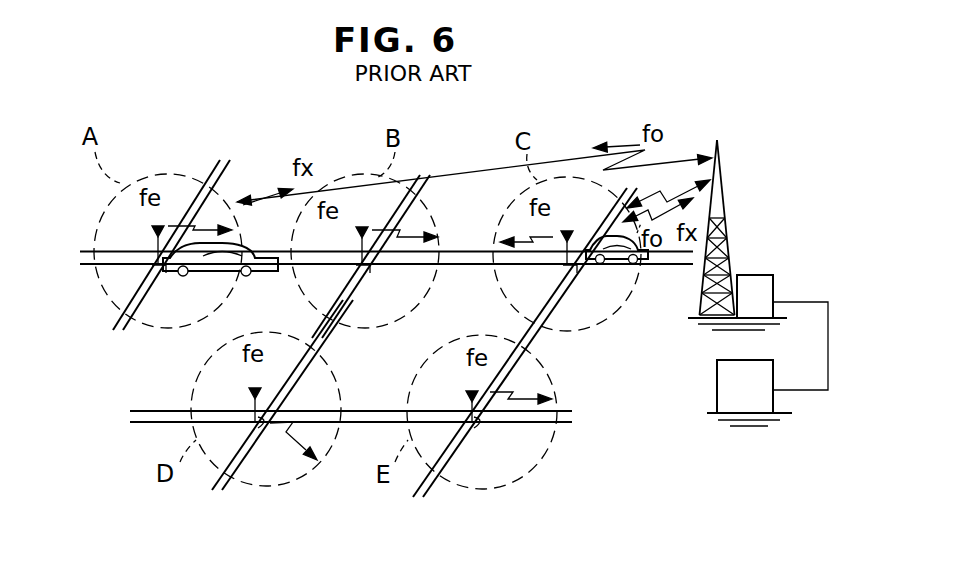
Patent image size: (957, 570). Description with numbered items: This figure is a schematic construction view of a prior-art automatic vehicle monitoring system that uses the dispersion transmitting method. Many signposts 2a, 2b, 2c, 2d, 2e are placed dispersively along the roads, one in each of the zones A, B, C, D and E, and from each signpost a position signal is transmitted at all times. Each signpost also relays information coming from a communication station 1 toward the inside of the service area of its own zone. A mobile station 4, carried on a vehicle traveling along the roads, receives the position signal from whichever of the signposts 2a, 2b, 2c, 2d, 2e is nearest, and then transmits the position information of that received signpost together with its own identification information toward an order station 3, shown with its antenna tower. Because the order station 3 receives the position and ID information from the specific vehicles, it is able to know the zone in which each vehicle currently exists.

The communication station 1 is at (755, 400).
The signpost 2a is at (100, 264).
The signpost 2b is at (380, 250).
The signpost 2c is at (578, 268).
The signpost 2d is at (267, 430).
The signpost 2e is at (483, 423).
The order station 3 is at (737, 276).
The mobile station 4 is at (258, 275).